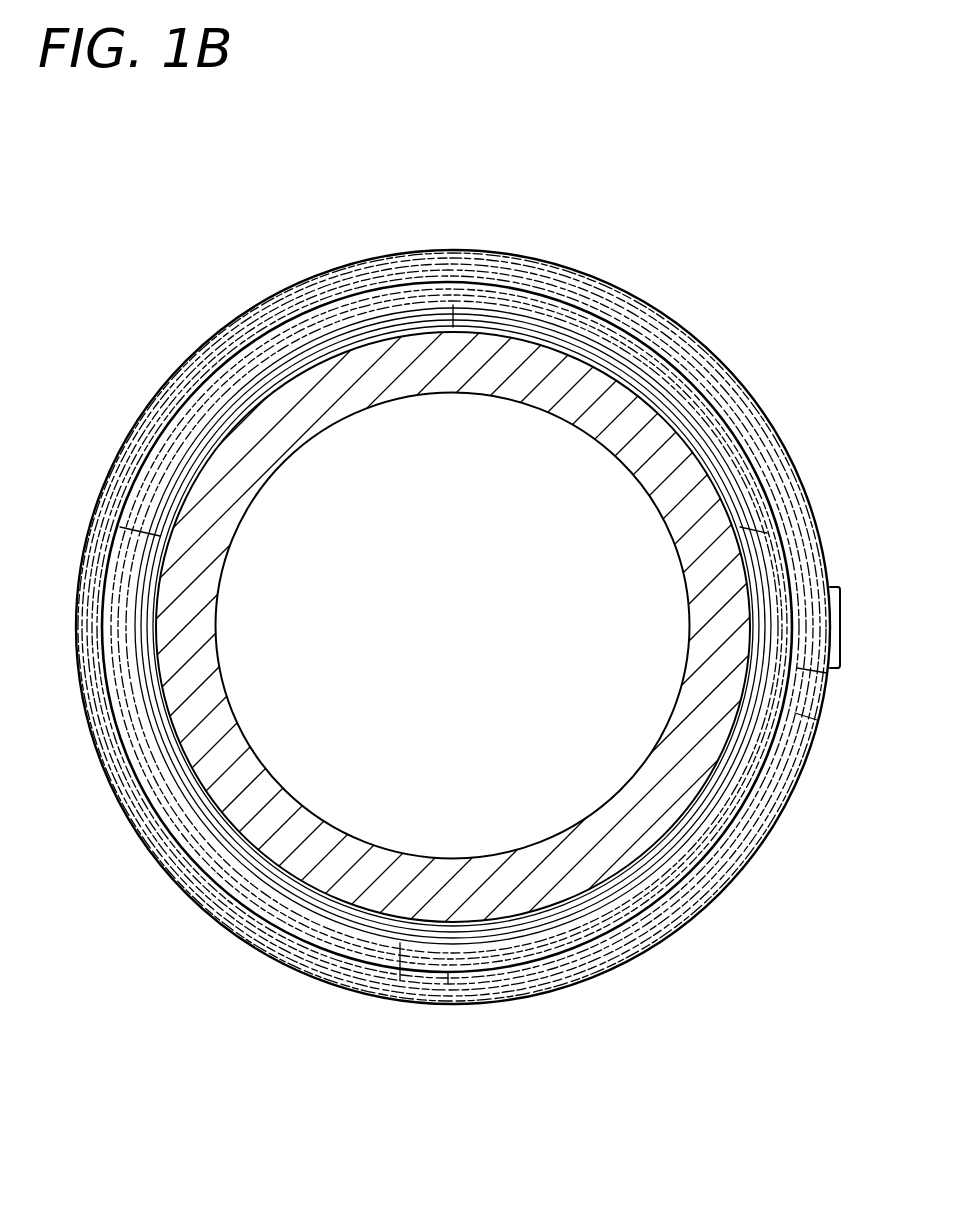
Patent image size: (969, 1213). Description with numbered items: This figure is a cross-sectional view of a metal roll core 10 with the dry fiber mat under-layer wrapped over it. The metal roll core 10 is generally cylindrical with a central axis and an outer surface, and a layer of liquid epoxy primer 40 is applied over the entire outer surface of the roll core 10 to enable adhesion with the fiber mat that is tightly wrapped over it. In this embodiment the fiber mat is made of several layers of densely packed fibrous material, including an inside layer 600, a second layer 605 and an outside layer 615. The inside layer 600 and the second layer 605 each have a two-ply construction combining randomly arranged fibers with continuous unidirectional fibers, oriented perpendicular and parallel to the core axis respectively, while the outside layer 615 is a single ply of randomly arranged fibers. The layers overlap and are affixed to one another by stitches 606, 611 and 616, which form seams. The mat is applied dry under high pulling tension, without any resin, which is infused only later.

The metal roll core 10 is at (656, 490).
The liquid epoxy primer 40 is at (240, 442).
The inside layer 600 is at (737, 533).
The second layer 605 is at (757, 466).
The stitches 606 is at (160, 573).
The stitches 611 is at (357, 990).
The outside layer 615 is at (598, 284).
The stitches 616 is at (812, 722).